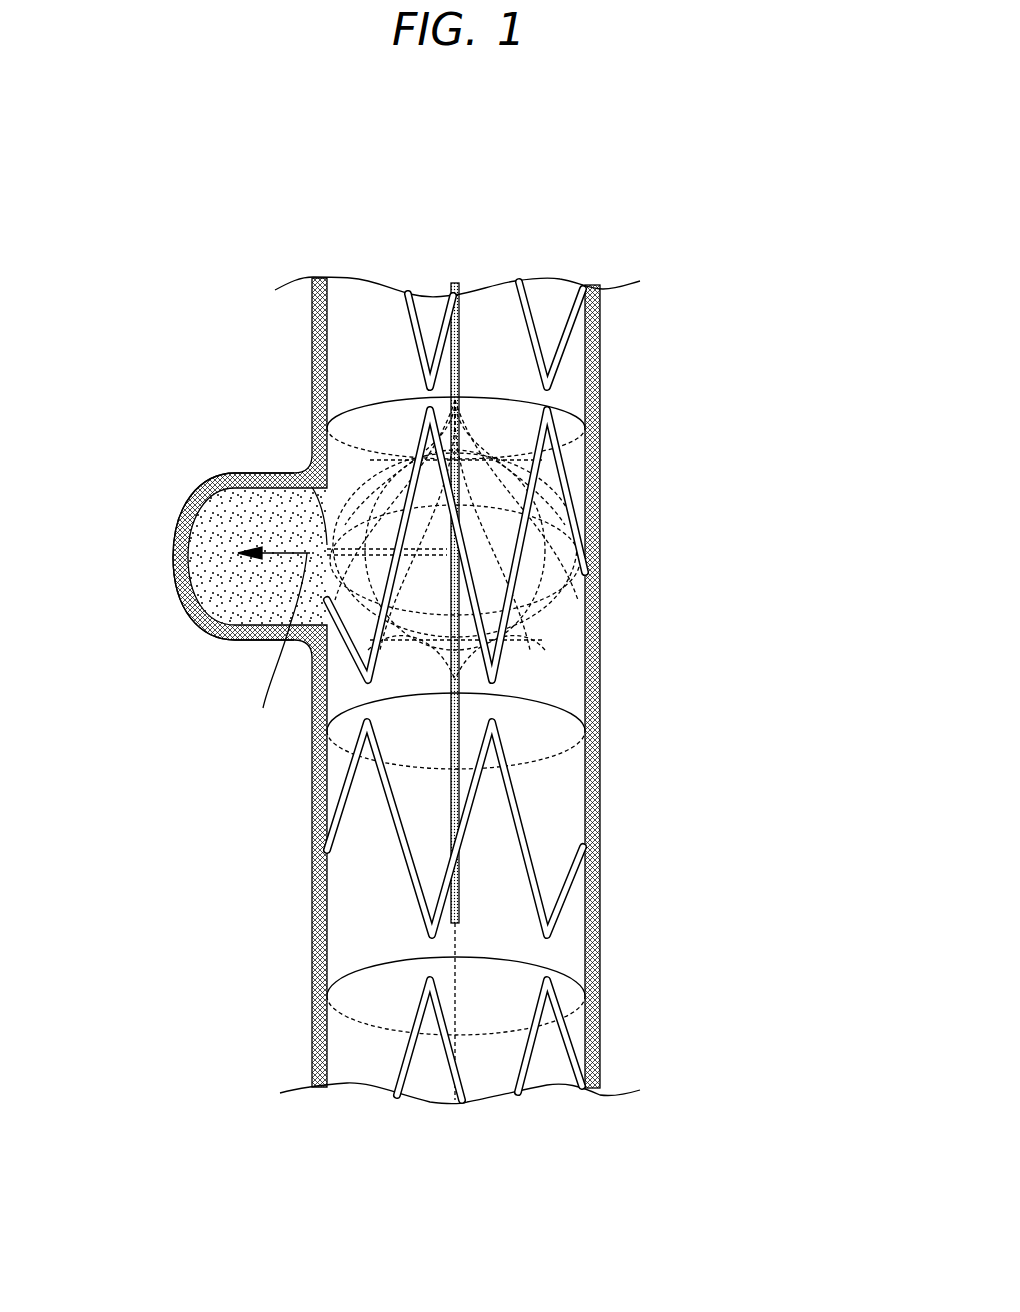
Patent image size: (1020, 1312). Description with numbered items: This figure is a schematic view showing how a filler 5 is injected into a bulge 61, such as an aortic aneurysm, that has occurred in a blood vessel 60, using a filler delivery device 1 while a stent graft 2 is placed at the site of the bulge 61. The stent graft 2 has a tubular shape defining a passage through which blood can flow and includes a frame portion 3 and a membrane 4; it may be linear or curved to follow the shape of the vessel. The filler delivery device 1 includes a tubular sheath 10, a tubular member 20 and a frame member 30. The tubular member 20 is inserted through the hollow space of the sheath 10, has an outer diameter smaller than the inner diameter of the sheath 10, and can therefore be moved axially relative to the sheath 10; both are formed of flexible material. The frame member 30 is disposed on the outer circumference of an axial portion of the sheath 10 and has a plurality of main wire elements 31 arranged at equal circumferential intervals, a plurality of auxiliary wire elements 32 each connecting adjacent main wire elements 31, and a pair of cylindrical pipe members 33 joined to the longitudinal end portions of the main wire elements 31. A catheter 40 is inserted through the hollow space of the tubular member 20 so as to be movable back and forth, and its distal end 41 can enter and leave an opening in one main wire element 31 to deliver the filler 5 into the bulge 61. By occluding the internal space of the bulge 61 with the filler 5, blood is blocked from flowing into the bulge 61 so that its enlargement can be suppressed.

The filler delivery device 1 is at (633, 507).
The stent graft 2 is at (557, 911).
The frame portion 3 is at (568, 893).
The membrane 4 is at (543, 811).
The filler 5 is at (194, 506).
The tubular sheath 10 is at (600, 617).
The tubular member 20 is at (355, 495).
The frame member 30 is at (567, 566).
The main wire element 31 is at (600, 400).
The auxiliary wire element 32 is at (608, 564).
The cylindrical pipe member 33 is at (462, 337).
The catheter 40 is at (289, 615).
The distal end 41 is at (317, 552).
The blood vessel 60 is at (600, 330).
The bulge 61 is at (177, 592).